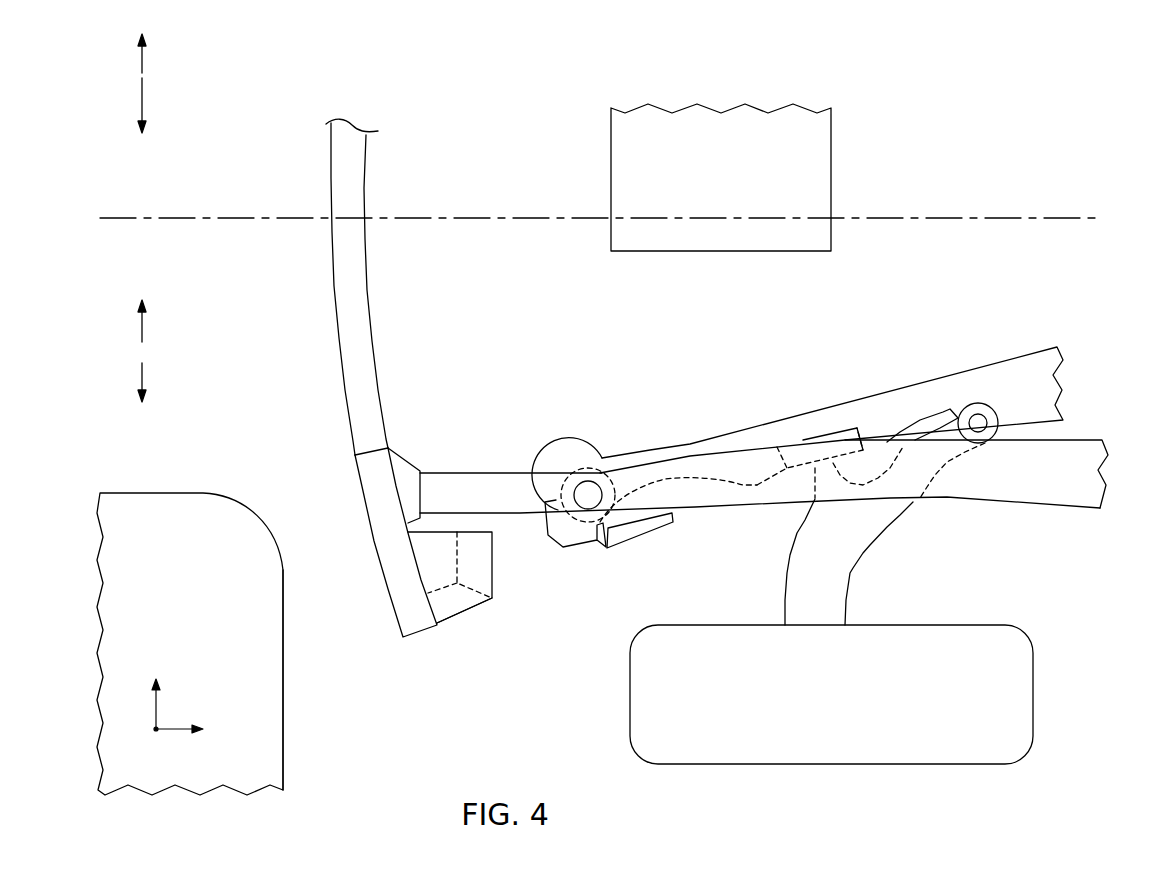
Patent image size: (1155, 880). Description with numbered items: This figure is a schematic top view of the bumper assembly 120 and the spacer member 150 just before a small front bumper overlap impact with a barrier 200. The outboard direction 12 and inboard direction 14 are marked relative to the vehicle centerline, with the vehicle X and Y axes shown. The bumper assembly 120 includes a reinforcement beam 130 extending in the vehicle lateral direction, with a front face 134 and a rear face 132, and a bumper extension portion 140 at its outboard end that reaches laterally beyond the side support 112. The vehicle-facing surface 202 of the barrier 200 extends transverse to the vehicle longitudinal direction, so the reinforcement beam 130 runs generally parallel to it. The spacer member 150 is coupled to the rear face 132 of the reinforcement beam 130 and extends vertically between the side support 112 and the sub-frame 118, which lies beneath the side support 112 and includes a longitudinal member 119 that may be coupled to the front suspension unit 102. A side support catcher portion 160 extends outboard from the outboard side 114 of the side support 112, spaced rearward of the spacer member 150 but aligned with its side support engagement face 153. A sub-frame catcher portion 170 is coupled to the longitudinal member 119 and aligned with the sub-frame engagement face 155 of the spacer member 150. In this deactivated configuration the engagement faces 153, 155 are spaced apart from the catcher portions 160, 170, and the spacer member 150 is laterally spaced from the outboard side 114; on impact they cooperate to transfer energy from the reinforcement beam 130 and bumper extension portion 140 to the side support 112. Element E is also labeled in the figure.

The outboard direction 12 is at (142, 58).
The inboard direction 14 is at (142, 104).
The engine / electrical component E is at (831, 166).
The front suspension unit 102 is at (888, 697).
The side support 112 is at (573, 439).
The outboard side of the side support 114 is at (483, 513).
The sub-frame 118 is at (854, 475).
The longitudinal member 119 is at (757, 487).
The bumper assembly 120 is at (321, 397).
The reinforcement beam 130 is at (321, 414).
The rear face of the reinforcement beam 132 is at (380, 399).
The front face of the reinforcement beam 134 is at (336, 323).
The bumper extension portion 140 is at (386, 579).
The spacer member 150 is at (483, 621).
The side support engagement face 153 is at (492, 586).
The sub-frame engagement face 155 is at (460, 553).
The side support catcher portion 160 is at (668, 561).
The sub-frame catcher portion 170 is at (591, 566).
The barrier 200 is at (224, 591).
The vehicle-facing surface 202 is at (283, 607).